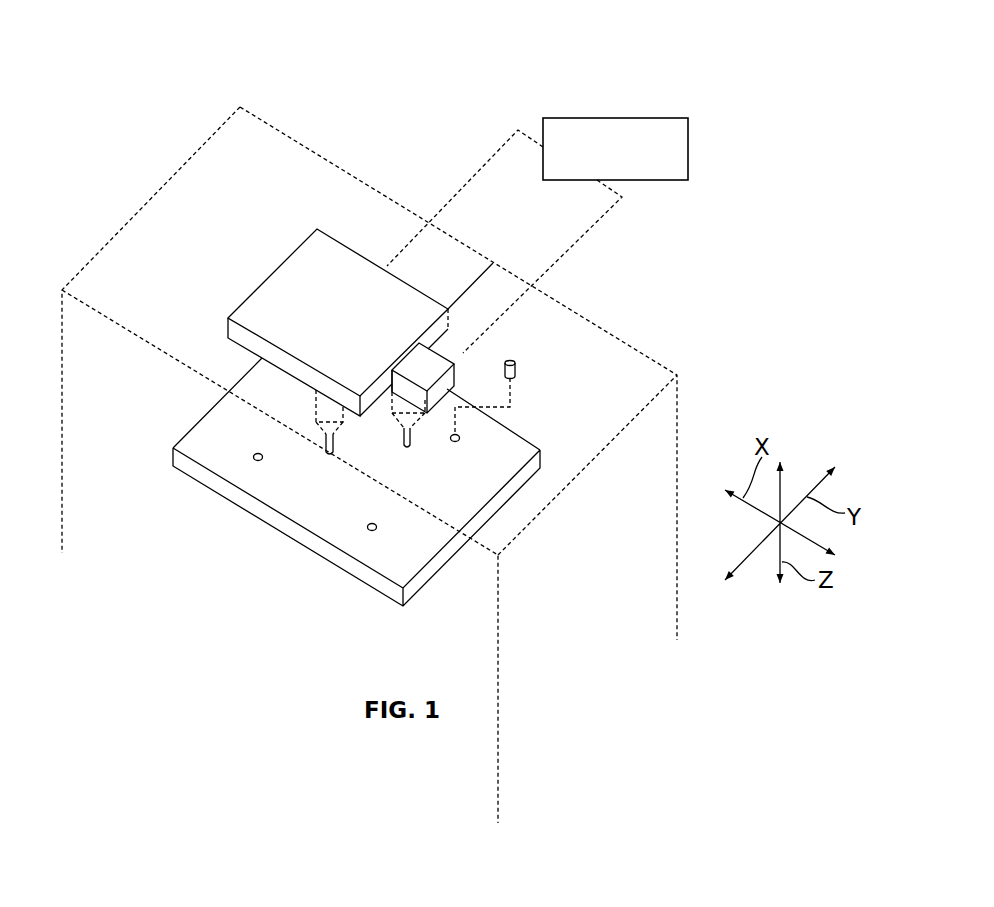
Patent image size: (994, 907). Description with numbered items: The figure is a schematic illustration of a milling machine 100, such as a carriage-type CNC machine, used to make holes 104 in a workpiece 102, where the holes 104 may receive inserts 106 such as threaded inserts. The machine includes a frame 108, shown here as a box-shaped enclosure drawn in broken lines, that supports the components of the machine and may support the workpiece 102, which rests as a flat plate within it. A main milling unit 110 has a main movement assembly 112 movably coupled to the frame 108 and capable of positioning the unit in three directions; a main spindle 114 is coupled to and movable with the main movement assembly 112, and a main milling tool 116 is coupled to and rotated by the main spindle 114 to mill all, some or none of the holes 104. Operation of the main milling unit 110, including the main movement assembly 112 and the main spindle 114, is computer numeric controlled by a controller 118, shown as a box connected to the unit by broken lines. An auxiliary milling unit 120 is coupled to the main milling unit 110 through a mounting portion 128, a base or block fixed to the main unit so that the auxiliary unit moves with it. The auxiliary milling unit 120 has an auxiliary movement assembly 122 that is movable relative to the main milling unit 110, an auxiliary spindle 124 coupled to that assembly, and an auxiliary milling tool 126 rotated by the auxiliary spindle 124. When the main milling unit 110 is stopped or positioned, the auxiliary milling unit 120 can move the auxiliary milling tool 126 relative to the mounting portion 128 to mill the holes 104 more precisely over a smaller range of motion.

The milling machine 100 is at (428, 68).
The workpiece 102 is at (390, 563).
The holes 104 is at (470, 438).
The inserts 106 is at (515, 368).
The frame 108 is at (680, 372).
The main milling unit 110 is at (305, 233).
The main movement assembly 112 is at (350, 283).
The main spindle 114 is at (318, 437).
The main milling tool 116 is at (328, 456).
The controller 118 is at (616, 118).
The auxiliary milling unit 120 is at (470, 371).
The auxiliary movement assembly 122 is at (448, 389).
The auxiliary spindle 124 is at (394, 434).
The auxiliary milling tool 126 is at (412, 437).
The mounting portion 128 is at (387, 372).